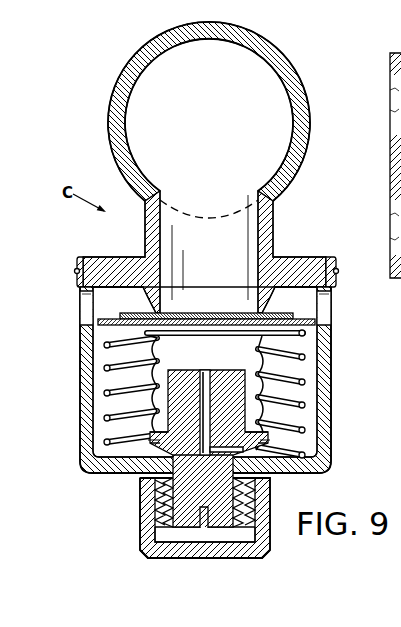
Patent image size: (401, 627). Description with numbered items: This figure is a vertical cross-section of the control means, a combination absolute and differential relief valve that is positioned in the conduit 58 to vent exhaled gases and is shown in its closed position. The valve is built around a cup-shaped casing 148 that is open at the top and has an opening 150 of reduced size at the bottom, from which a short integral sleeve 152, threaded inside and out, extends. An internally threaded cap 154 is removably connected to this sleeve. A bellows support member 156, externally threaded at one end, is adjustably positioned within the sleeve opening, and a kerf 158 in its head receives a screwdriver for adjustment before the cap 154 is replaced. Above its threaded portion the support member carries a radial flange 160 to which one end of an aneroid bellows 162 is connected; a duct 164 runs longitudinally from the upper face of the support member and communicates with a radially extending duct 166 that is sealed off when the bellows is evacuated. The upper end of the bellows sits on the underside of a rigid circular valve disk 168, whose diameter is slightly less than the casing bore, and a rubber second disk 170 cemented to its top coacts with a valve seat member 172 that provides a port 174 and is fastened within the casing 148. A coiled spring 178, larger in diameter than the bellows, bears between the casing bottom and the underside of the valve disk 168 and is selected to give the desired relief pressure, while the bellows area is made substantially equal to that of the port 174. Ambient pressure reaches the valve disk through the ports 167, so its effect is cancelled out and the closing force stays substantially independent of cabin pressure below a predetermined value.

The conduit 58 is at (131, 104).
The valve seat member 172 is at (296, 260).
The port 174 is at (337, 268).
The ports 167 is at (82, 305).
The second disk 170 is at (278, 320).
The valve disk 168 is at (262, 326).
The aneroid bellows 162 is at (270, 362).
The cup-shaped casing 148 is at (326, 405).
The coiled spring 178 is at (300, 432).
The bellows support member 156 is at (226, 369).
The duct 164 is at (205, 380).
The radially extending duct 166 is at (221, 449).
The radial flange 160 is at (157, 438).
The opening 150 is at (259, 480).
The sleeve 152 is at (153, 507).
The kerf 158 is at (205, 524).
The cap 154 is at (262, 547).